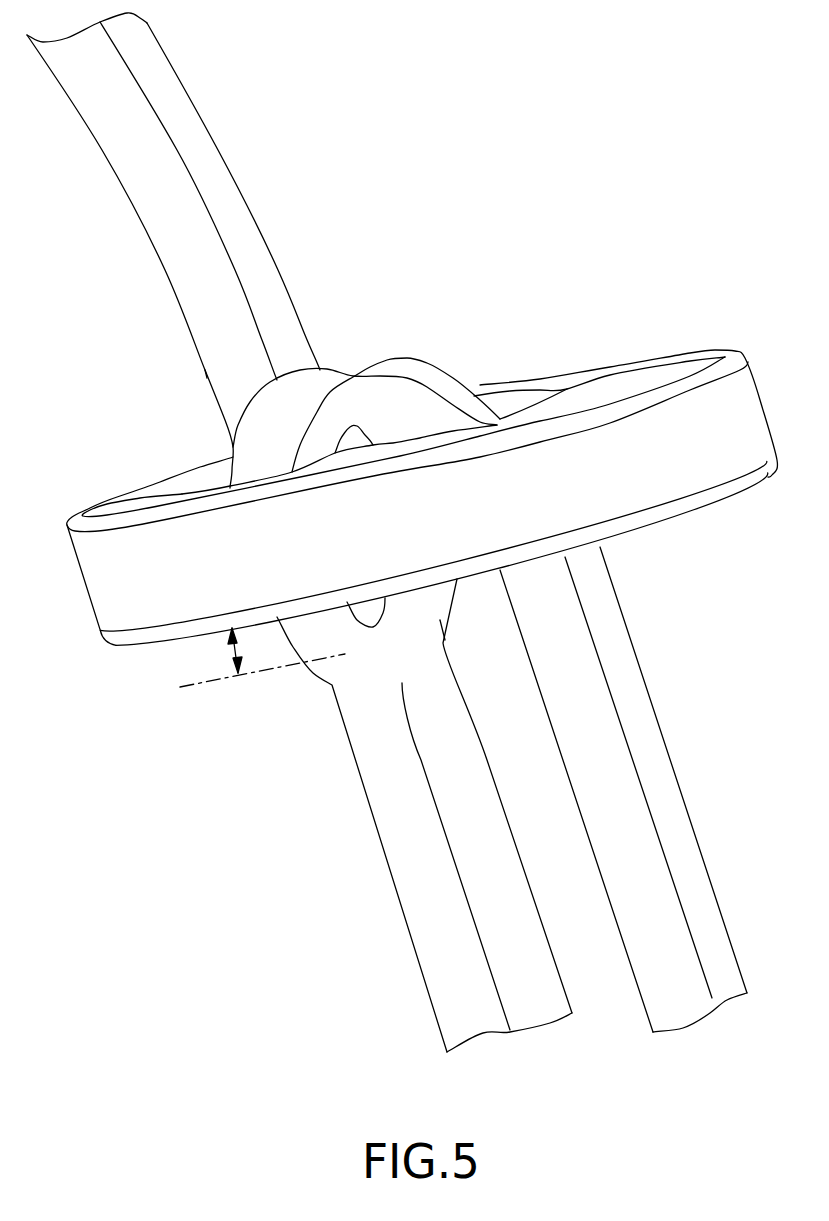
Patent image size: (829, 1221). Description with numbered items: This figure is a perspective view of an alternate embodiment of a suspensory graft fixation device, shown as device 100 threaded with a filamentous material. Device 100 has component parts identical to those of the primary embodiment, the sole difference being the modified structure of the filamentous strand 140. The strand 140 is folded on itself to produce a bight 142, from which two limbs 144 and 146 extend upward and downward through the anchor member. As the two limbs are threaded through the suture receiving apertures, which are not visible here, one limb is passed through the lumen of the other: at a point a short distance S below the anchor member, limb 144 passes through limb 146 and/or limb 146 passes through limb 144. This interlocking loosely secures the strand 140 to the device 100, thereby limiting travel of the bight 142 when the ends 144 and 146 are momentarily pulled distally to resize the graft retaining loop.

The device 100 is at (157, 770).
The filamentous strand 140 is at (700, 855).
The bight 142 is at (283, 413).
The limb 144 is at (213, 363).
The limb 146 is at (290, 335).
The distance S is at (227, 640).